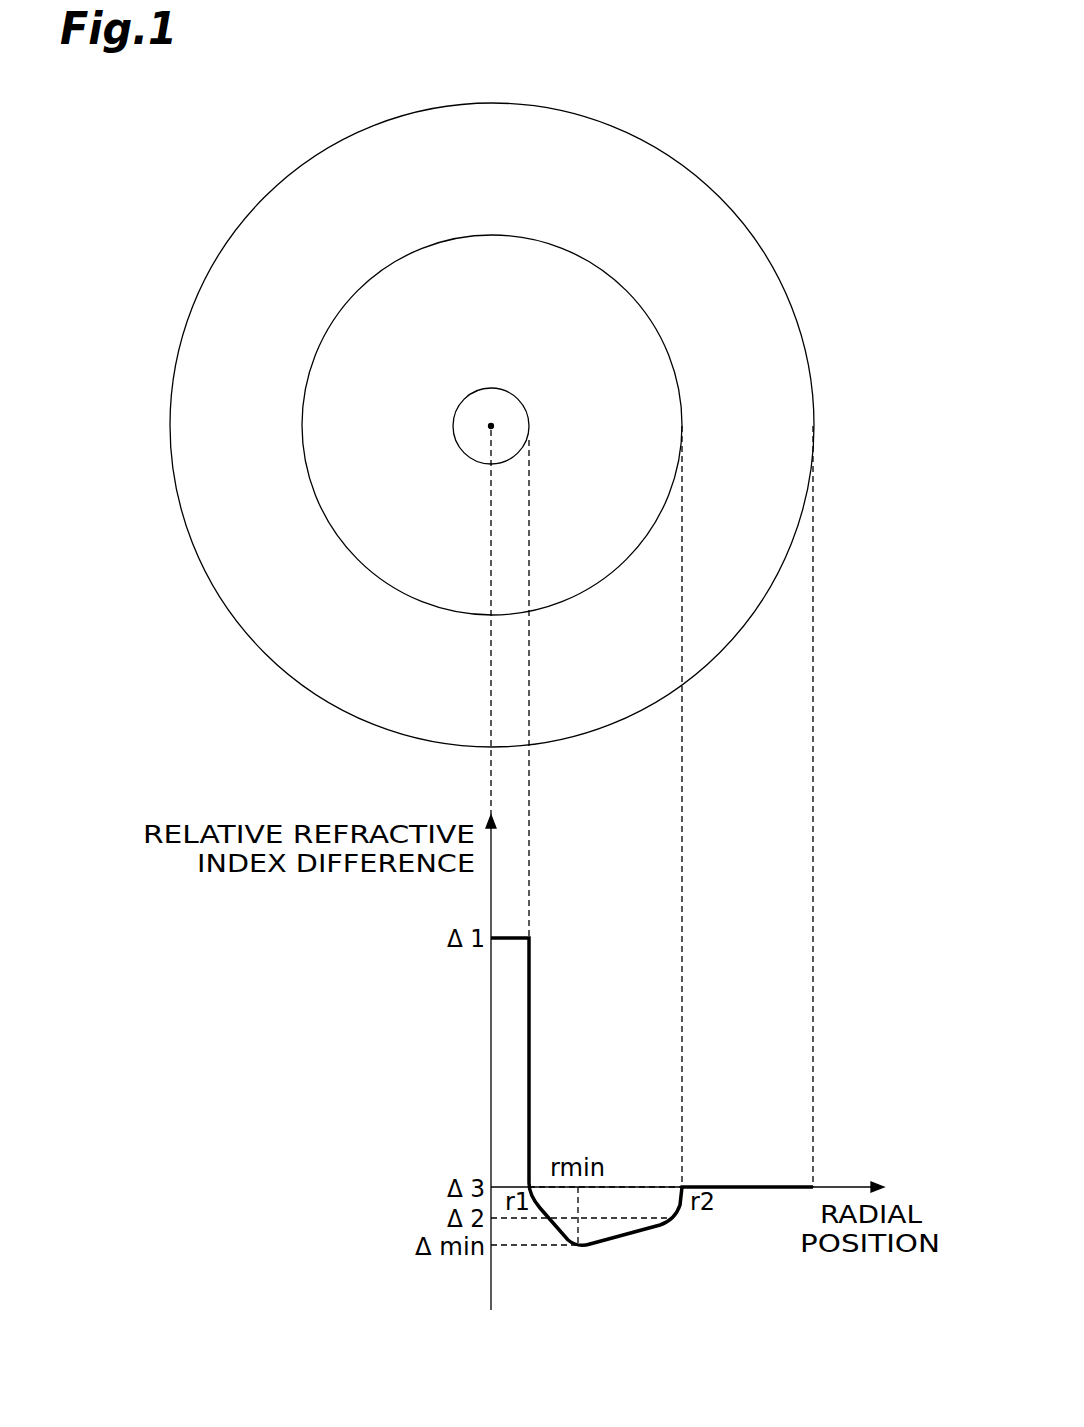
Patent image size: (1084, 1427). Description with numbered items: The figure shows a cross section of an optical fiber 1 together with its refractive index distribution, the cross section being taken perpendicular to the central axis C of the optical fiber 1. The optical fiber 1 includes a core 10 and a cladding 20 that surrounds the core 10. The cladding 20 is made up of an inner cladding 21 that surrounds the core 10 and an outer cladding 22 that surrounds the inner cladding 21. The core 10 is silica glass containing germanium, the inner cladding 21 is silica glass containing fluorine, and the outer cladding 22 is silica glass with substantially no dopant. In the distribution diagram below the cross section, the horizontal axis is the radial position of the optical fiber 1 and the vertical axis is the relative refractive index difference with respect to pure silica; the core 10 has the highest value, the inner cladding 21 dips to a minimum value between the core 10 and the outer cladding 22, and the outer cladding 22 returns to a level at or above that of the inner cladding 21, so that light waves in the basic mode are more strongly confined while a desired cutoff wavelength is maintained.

The optical fiber 1 is at (461, 409).
The core 10 is at (467, 423).
The cladding 20 is at (444, 425).
The inner cladding 21 is at (325, 445).
The outer cladding 22 is at (195, 499).
The central axis C is at (491, 426).